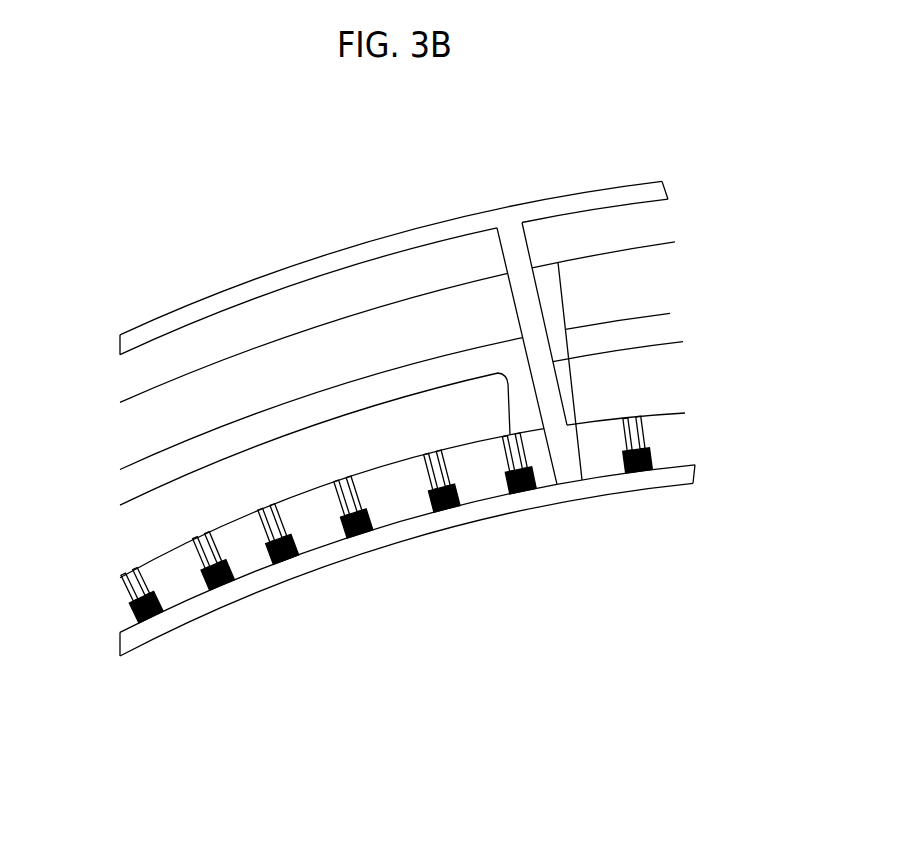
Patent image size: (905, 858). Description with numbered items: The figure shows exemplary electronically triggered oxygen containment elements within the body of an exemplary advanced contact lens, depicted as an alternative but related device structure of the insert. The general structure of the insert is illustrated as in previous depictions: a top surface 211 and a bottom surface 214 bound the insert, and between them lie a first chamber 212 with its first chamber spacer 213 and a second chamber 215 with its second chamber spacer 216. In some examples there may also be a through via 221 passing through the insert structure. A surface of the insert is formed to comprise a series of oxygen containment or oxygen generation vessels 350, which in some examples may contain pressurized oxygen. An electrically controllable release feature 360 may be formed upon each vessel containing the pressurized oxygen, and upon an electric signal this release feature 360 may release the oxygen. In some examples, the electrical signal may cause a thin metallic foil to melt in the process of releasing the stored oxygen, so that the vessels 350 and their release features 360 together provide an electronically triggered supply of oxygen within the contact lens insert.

The top surface 211 is at (272, 317).
The first chamber 212 is at (362, 358).
The first chamber spacer 213 is at (547, 298).
The bottom surface 214 is at (313, 523).
The second chamber 215 is at (620, 378).
The second chamber spacer 216 is at (523, 400).
The through via 221 is at (555, 415).
The vessels 350 is at (275, 518).
The electrically controllable release feature 360 is at (292, 558).